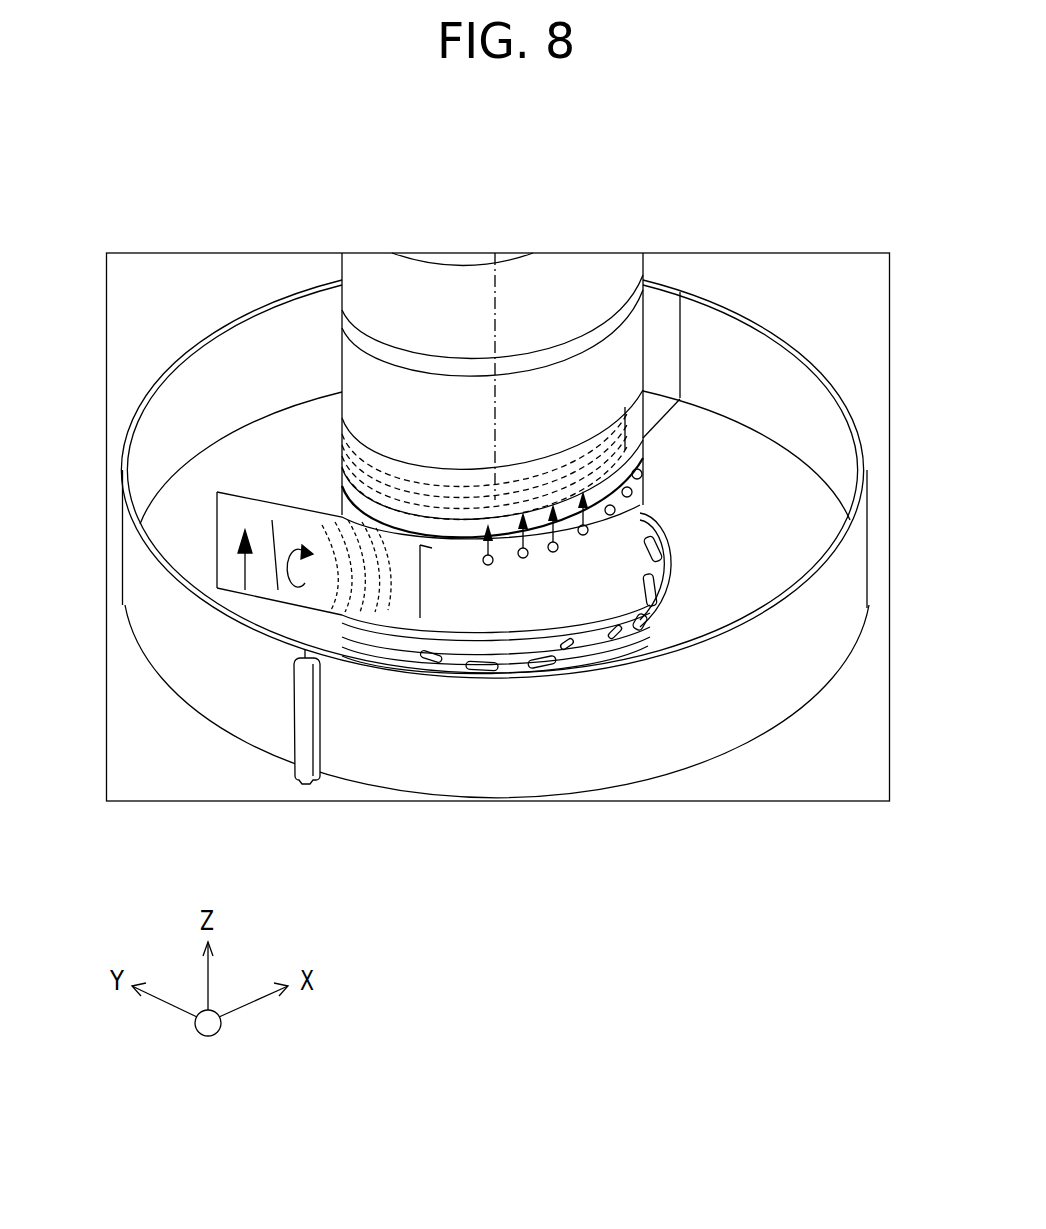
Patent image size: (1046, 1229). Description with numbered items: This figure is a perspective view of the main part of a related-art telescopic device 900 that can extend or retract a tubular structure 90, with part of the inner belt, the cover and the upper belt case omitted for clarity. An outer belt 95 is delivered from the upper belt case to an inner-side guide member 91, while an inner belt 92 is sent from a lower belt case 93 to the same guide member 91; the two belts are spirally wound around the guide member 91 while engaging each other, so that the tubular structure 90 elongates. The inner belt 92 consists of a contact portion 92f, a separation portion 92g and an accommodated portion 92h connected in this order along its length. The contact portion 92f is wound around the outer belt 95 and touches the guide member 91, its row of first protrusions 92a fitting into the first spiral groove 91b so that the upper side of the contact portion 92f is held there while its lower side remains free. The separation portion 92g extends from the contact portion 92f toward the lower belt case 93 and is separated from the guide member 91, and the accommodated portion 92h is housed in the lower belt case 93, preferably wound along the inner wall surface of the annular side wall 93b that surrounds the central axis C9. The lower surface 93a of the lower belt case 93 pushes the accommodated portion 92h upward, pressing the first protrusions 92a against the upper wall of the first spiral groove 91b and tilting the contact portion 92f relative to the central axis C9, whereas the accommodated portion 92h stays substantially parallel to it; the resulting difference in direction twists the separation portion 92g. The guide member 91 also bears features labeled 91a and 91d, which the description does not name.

The telescopic device 900 is at (894, 176).
The tubular structure 90 is at (650, 202).
The outer belt 95 is at (492, 361).
The inner belt 92 is at (499, 537).
The first protrusions 92a is at (516, 670).
The contact portion 92f is at (640, 506).
The separation portion 92g is at (305, 510).
The accommodated portion 92h is at (235, 578).
The lower belt case 93 is at (544, 533).
The lower surface 93a is at (807, 517).
The side wall 93b is at (858, 543).
The inner-side guide member 91 is at (647, 599).
The slots 91a is at (600, 600).
The first spiral groove 91b is at (643, 438).
The side slot 91d is at (640, 610).
The central axis C9 is at (480, 376).